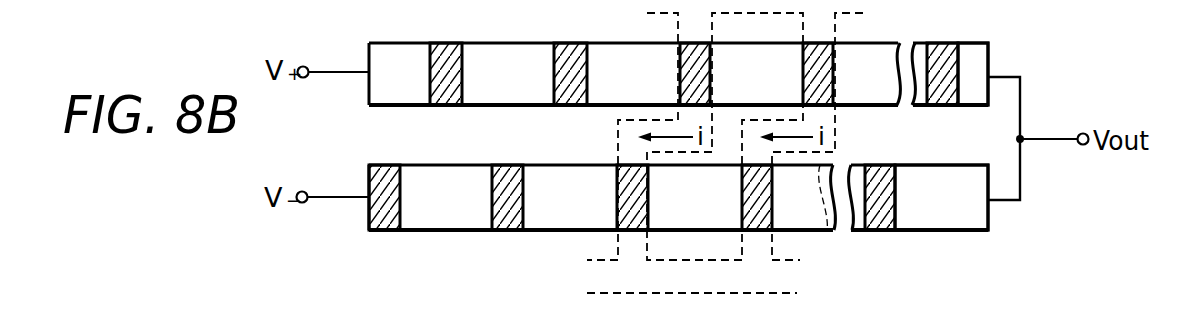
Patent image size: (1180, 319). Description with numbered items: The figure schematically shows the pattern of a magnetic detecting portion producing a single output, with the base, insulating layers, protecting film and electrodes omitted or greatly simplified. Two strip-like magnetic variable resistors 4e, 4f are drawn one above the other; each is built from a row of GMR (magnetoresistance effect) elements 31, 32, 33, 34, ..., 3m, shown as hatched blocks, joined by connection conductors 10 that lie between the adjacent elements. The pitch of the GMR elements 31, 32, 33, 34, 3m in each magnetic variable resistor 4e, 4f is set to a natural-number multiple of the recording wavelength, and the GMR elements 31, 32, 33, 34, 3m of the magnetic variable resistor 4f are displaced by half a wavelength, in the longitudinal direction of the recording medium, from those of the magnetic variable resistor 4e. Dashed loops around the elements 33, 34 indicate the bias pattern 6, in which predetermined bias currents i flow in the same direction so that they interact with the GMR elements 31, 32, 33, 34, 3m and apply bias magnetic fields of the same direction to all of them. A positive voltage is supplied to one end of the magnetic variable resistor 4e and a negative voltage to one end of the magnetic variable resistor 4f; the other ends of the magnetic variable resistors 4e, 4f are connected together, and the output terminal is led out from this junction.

The connection conductor 10 is at (678, 159).
The magnetoresistance effect element 31 is at (419, 181).
The magnetoresistance effect element 32 is at (543, 164).
The magnetoresistance effect element 33 is at (693, 138).
The magnetoresistance effect element 34 is at (816, 138).
The magnetoresistance effect element 3m is at (927, 151).
The magnetic variable resistor 4e is at (978, 63).
The magnetic variable resistor 4f is at (958, 218).
The bias pattern 6 is at (827, 232).